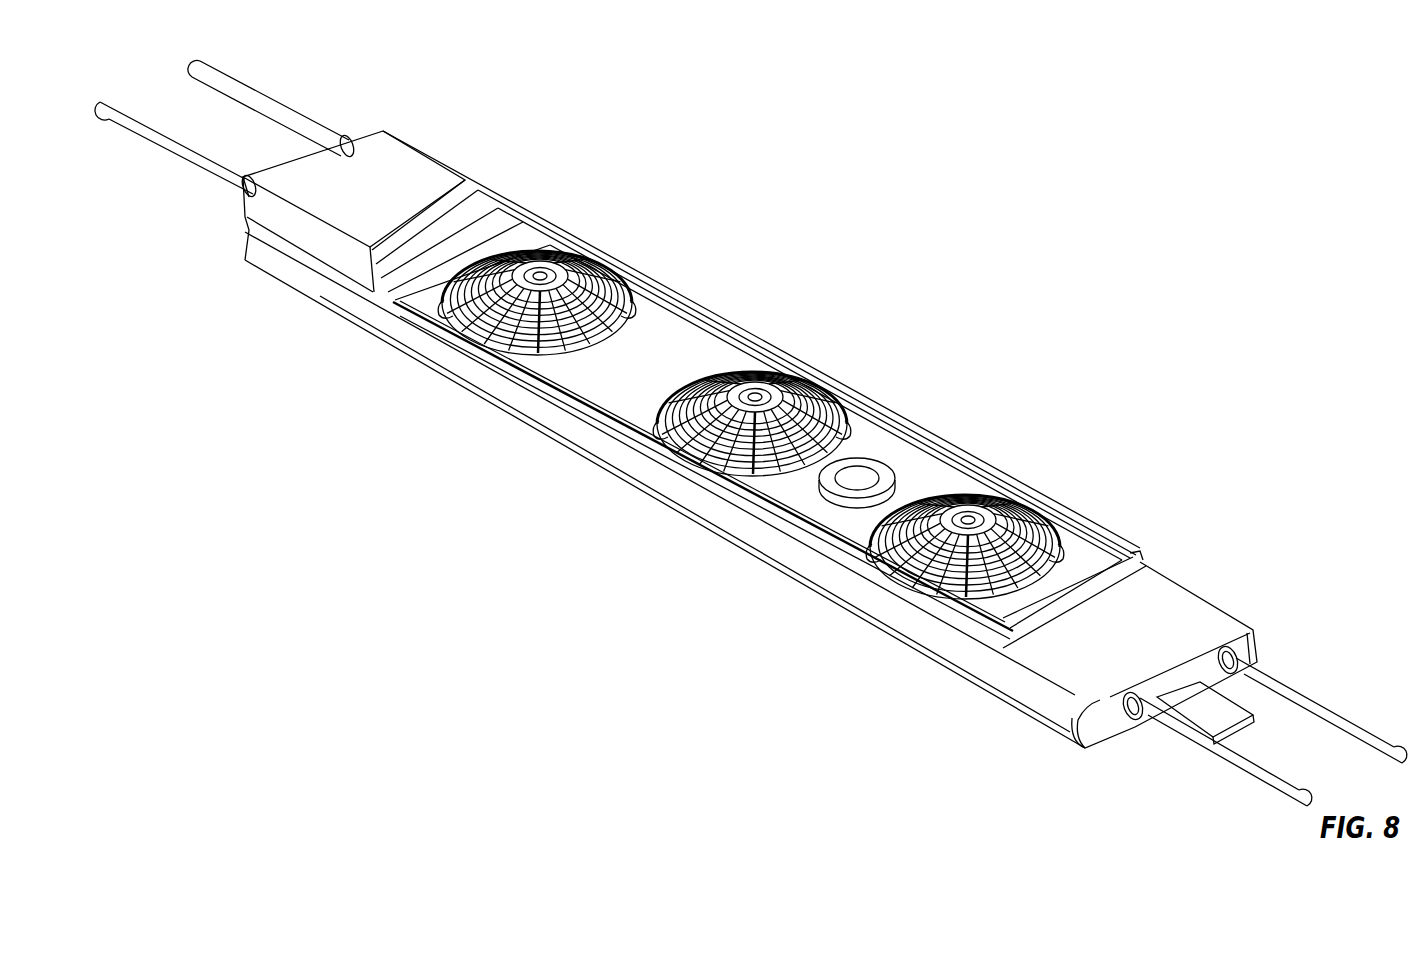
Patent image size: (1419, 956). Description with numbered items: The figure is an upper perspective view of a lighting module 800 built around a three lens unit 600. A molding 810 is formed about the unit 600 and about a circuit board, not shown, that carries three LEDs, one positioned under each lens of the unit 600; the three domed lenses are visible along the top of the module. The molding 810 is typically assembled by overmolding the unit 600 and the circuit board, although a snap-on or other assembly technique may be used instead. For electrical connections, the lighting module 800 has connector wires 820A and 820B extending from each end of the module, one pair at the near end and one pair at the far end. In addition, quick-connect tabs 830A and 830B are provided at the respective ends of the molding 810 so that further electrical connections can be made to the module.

The lighting module 800 is at (961, 124).
The molding 810 is at (463, 193).
The three lens unit 600 is at (659, 345).
The connector wire 820A is at (1262, 682).
The connector wire 820B is at (268, 103).
The quick-connect tab 830A is at (1202, 702).
The quick-connect tab 830B is at (277, 170).